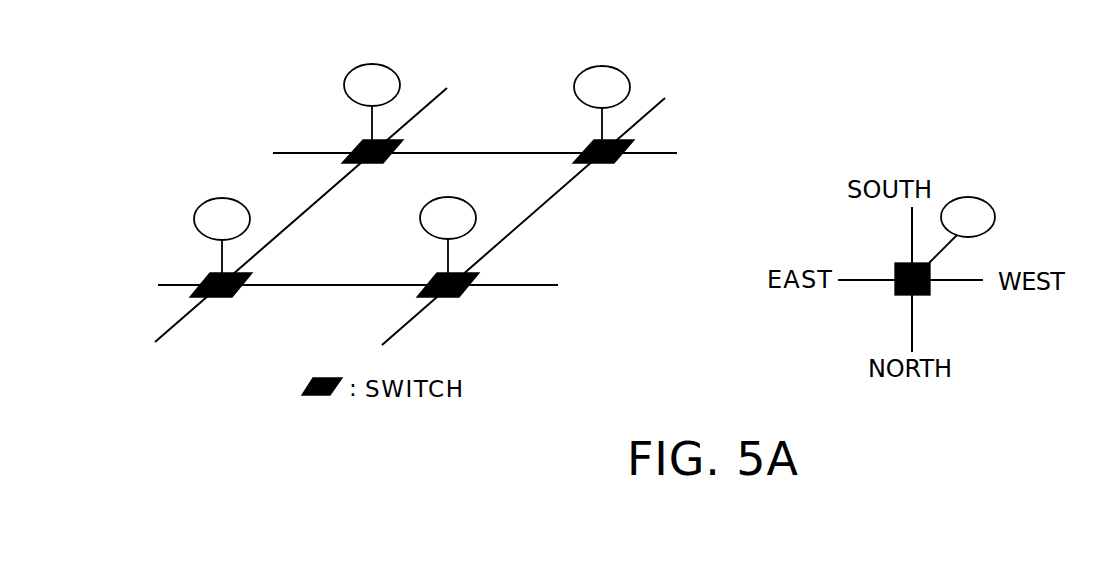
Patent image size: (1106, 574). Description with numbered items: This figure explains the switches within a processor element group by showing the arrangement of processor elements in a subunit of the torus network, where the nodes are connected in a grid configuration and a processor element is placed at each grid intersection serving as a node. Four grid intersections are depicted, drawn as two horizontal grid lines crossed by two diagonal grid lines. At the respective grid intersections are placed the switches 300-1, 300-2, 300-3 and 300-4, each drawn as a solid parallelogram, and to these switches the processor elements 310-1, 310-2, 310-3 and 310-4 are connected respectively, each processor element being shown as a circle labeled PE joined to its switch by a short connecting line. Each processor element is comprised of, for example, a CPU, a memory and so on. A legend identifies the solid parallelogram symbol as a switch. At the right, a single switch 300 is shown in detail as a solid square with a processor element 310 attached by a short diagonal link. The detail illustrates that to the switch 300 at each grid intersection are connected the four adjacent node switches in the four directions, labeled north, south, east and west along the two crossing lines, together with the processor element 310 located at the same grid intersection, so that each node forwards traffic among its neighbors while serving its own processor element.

The switch 300-1 is at (399, 142).
The switch 300-2 is at (248, 275).
The switch 300-3 is at (630, 142).
The switch 300-4 is at (475, 275).
The processor element 310-1 is at (392, 71).
The processor element 310-2 is at (242, 205).
The processor element 310-3 is at (622, 73).
The processor element 310-4 is at (468, 184).
The switch 300 is at (930, 295).
The processor element 310 is at (990, 202).